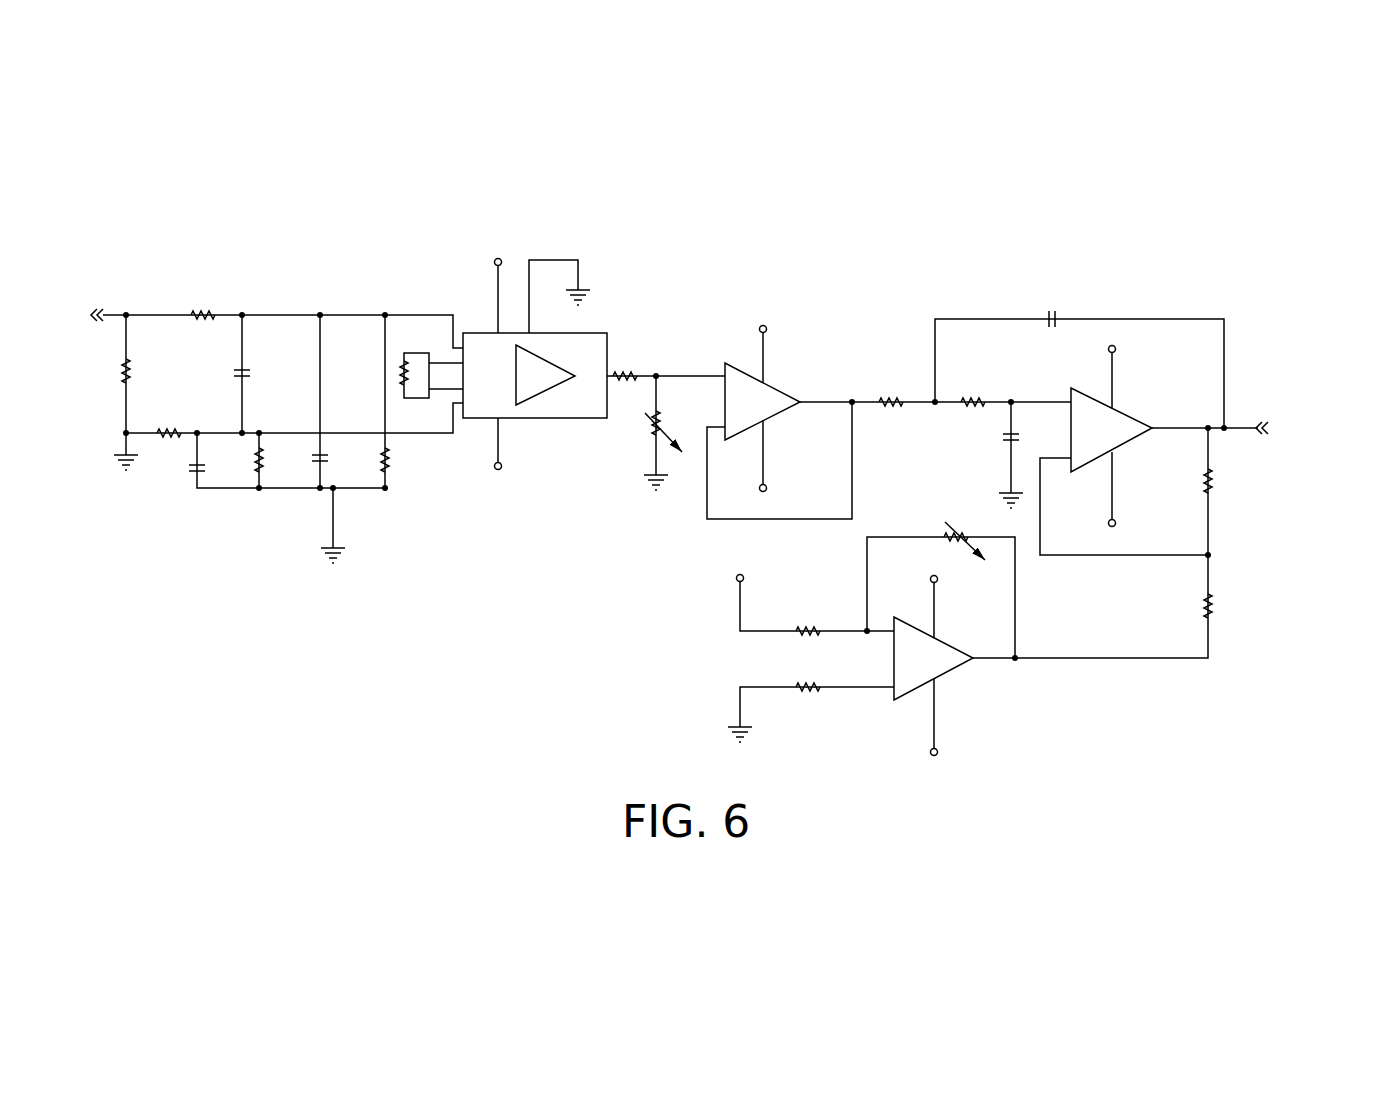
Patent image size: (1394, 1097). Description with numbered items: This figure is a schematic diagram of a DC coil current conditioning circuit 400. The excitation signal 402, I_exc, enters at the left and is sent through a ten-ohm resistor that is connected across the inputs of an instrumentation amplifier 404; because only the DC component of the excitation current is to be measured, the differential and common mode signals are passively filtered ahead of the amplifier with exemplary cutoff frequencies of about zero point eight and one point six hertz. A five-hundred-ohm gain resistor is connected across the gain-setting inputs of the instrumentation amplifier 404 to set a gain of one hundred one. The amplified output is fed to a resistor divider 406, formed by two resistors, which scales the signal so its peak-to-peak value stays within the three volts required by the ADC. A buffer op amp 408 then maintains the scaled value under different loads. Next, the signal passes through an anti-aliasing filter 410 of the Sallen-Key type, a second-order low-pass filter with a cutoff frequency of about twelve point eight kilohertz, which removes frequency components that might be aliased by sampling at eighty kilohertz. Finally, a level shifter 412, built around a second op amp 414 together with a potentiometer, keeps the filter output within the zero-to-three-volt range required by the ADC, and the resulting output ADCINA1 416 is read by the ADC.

The DC coil current conditioning circuit 400 is at (973, 210).
The excitation signal 402 is at (58, 332).
The instrumentation amplifier 404 is at (565, 447).
The resistor divider 406 is at (633, 395).
The Op Amp U17B 408 is at (812, 367).
The anti-aliasing filter 410 is at (1192, 357).
The level shifter 412 is at (1015, 702).
The Op Amp U17C 414 is at (852, 707).
The output ADCINA1 416 is at (1312, 443).